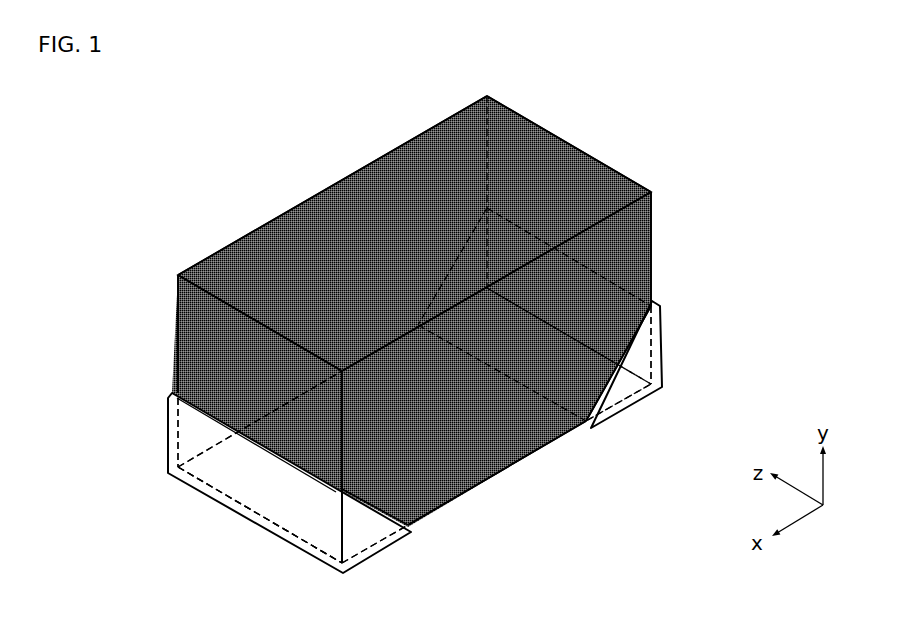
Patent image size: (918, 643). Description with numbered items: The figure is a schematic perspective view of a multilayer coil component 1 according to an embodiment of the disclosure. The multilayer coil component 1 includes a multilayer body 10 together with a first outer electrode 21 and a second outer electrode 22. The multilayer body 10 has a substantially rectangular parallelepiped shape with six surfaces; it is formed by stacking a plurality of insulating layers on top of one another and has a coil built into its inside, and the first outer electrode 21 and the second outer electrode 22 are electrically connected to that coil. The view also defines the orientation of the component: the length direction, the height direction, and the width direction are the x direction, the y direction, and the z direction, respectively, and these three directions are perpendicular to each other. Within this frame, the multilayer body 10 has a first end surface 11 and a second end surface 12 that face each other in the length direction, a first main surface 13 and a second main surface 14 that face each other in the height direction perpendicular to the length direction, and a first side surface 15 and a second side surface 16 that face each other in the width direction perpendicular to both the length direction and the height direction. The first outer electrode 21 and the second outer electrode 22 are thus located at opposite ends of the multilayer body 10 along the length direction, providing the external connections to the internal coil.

The multilayer coil component 1 is at (137, 154).
The multilayer body 10 is at (322, 177).
The first end surface 11 is at (193, 331).
The second end surface 12 is at (563, 175).
The first main surface 13 is at (428, 483).
The second main surface 14 is at (289, 246).
The first side surface 15 is at (512, 398).
The second side surface 16 is at (427, 183).
The first outer electrode 21 is at (238, 487).
The second outer electrode 22 is at (657, 350).